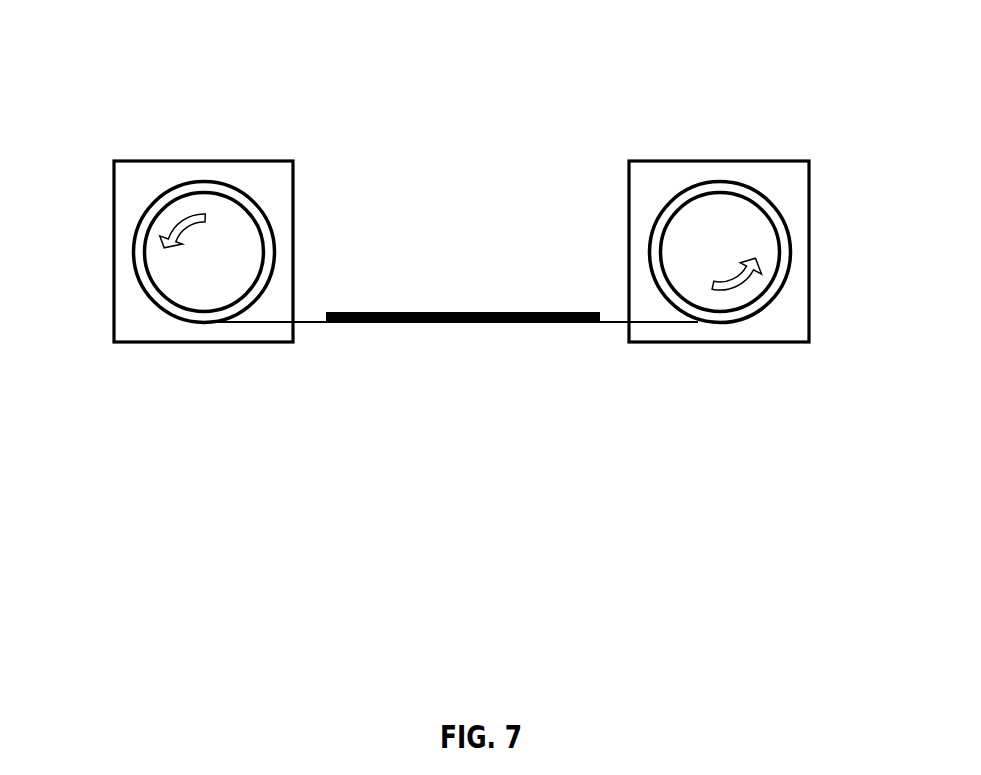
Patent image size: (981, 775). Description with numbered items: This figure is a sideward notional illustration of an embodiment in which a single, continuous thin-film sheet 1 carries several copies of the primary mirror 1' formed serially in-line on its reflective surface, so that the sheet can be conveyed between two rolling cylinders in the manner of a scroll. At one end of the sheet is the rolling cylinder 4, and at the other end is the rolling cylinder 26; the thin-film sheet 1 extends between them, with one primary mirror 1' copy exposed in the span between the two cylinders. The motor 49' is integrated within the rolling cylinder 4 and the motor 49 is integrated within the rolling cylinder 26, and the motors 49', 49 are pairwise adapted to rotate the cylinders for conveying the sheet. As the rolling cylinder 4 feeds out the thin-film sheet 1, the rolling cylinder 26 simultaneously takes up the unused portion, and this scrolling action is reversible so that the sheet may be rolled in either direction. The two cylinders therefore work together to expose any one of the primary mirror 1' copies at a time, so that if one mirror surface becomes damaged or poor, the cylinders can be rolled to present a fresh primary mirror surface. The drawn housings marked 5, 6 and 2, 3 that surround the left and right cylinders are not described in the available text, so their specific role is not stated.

The thin-film sheet 1 is at (455, 379).
The primary mirror 1' is at (461, 252).
The drive unit 2 is at (732, 195).
The drive housing 3 is at (772, 161).
The rolling cylinder 4 is at (161, 310).
The guide unit 5 is at (177, 195).
The guide housing 6 is at (162, 161).
The rolling cylinder 26 is at (776, 300).
The motor 49 is at (776, 300).
The motor 49' is at (161, 310).